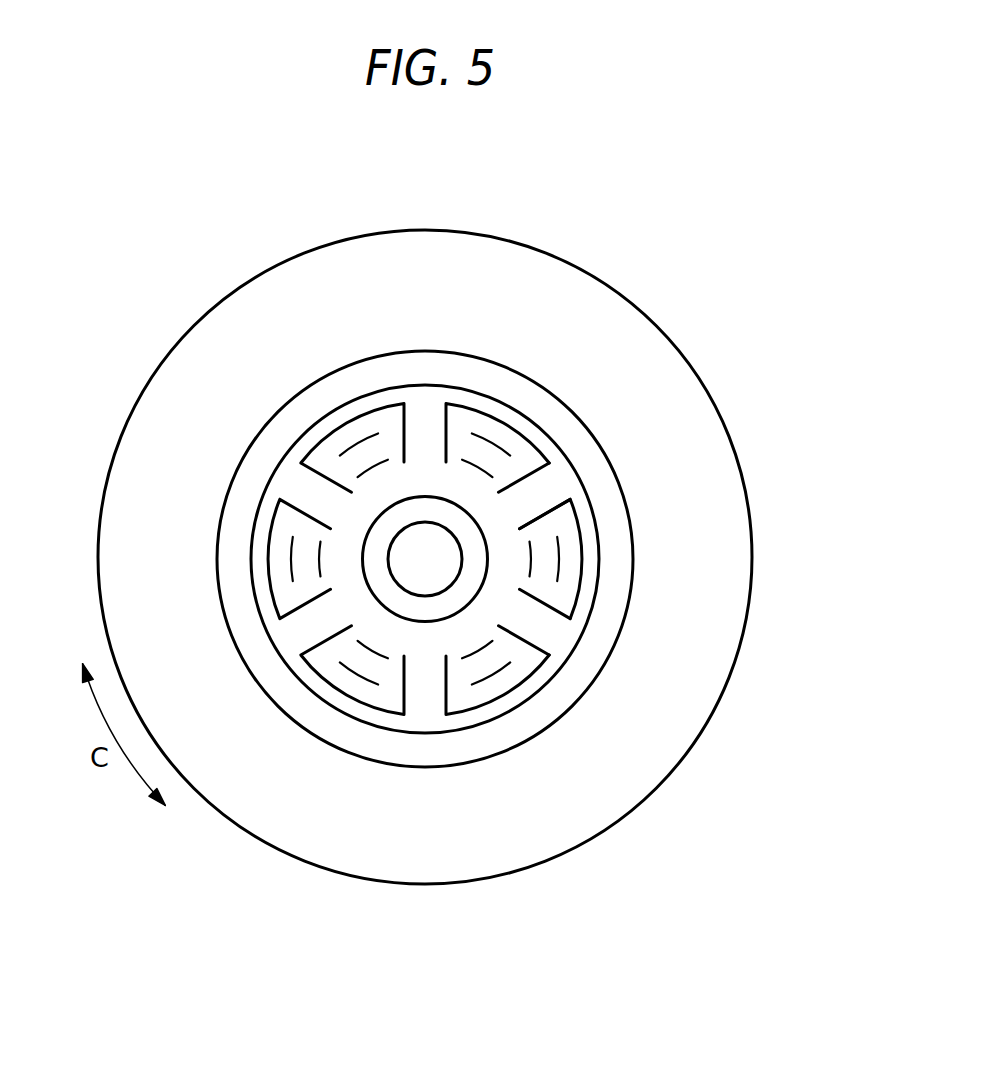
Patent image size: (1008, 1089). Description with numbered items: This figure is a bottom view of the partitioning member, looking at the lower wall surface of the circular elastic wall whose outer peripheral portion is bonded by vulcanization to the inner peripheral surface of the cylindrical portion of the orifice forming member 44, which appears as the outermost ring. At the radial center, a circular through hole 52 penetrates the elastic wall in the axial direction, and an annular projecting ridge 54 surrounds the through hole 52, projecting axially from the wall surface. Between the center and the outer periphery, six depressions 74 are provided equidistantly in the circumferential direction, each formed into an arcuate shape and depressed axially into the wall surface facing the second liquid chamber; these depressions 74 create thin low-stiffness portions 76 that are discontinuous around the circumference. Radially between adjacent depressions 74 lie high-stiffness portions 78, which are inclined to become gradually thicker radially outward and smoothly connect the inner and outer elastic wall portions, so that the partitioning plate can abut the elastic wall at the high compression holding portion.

The orifice forming member 44 is at (580, 315).
The through hole 52 is at (425, 574).
The annular projecting ridge 54 is at (442, 607).
The depression 74 is at (579, 502).
The low-stiffness portion 76 is at (503, 462).
The high-stiffness portion 78 is at (547, 495).